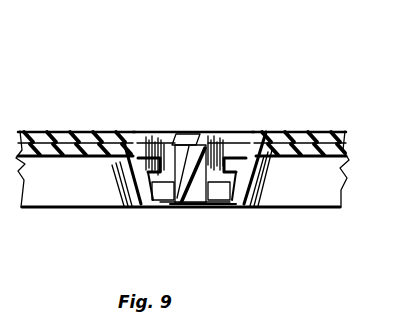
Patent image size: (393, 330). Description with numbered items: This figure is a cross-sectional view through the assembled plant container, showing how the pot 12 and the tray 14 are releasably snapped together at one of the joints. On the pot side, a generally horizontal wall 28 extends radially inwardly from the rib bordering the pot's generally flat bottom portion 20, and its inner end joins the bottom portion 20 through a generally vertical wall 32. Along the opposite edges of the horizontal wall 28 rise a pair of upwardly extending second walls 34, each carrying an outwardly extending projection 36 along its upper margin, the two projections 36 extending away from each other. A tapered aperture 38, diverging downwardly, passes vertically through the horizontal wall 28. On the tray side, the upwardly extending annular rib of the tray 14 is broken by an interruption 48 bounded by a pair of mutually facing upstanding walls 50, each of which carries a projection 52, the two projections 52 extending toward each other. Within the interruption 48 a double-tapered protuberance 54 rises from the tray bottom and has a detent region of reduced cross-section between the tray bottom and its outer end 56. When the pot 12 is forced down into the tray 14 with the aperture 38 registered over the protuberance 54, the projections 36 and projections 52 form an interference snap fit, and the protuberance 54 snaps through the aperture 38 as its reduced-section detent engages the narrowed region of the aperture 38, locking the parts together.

The pot 12 is at (33, 131).
The tray 14 is at (42, 208).
The generally flat bottom portion 20 is at (310, 131).
The horizontal wall 28 is at (227, 131).
The generally vertical wall 32 is at (153, 140).
The upwardly extending second wall 34 is at (170, 131).
The outwardly extending projection 36 is at (118, 171).
The aperture 38 is at (182, 210).
The interruption 48 is at (157, 210).
The upstanding wall 50 is at (128, 205).
The projection 52 is at (137, 131).
The double-tapered protuberance 54 is at (190, 210).
The outer end 56 is at (188, 132).